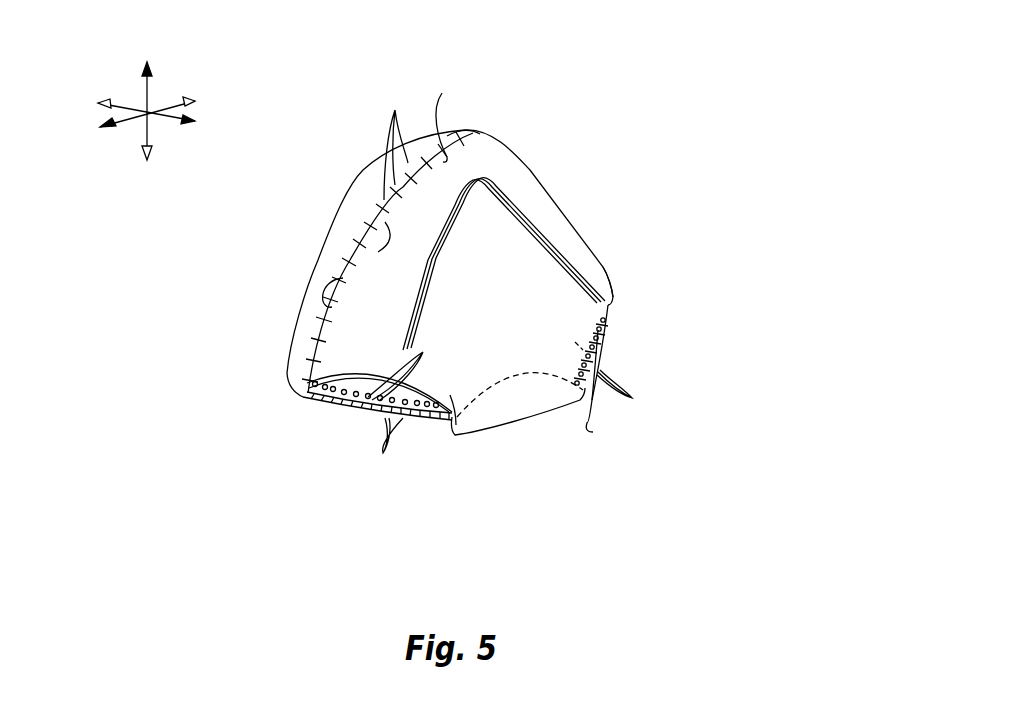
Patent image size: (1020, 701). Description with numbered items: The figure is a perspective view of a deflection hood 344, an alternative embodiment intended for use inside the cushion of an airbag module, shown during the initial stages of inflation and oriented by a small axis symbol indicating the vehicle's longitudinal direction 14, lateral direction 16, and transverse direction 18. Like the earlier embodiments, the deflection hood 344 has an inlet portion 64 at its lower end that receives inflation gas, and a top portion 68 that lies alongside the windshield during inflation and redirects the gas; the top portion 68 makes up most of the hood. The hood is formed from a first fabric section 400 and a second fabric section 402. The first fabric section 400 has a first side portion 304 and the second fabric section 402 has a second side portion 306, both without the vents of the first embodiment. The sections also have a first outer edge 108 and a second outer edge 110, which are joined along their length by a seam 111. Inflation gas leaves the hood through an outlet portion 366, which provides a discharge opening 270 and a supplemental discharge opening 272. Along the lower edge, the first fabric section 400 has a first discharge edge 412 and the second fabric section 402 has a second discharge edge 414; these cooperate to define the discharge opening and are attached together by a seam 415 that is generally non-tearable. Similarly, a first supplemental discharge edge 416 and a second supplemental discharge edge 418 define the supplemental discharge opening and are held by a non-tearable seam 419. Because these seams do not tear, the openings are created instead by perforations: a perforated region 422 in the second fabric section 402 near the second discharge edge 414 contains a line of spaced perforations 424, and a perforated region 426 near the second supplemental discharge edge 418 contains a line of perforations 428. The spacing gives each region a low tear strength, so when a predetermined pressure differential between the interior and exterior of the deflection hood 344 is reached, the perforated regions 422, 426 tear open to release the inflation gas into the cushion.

The longitudinal direction 14 is at (168, 105).
The lateral direction 16 is at (168, 112).
The transverse direction 18 is at (145, 102).
The inlet portion 64 is at (520, 415).
The top portion 68 is at (459, 118).
The first outer edge 108 is at (383, 224).
The second outer edge 110 is at (359, 275).
The seam 111 is at (379, 146).
The discharge opening 270 is at (300, 412).
The supplemental discharge opening 272 is at (620, 360).
The first side portion 304 is at (302, 295).
The second side portion 306 is at (502, 263).
The deflection hood 344 is at (622, 148).
The outlet portion 366 is at (443, 440).
The first fabric section 400 is at (318, 218).
The second fabric section 402 is at (550, 265).
The first discharge edge 412 is at (347, 407).
The second discharge edge 414 is at (363, 408).
The seam 415 is at (386, 453).
The first supplemental discharge edge 416 is at (623, 352).
The second supplemental discharge edge 418 is at (575, 342).
The seam 419 is at (572, 368).
The perforated region 422 is at (353, 375).
The perforations 424 is at (420, 368).
The perforated region 426 is at (620, 326).
The perforations 428 is at (636, 393).